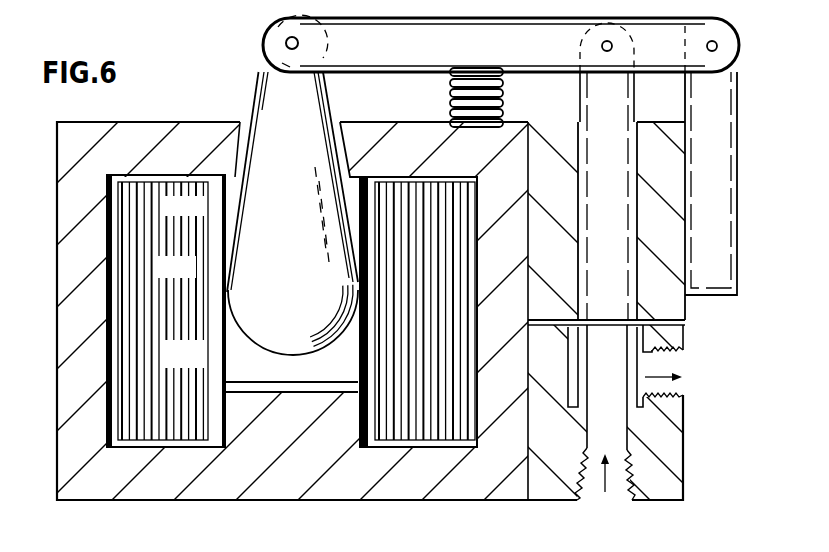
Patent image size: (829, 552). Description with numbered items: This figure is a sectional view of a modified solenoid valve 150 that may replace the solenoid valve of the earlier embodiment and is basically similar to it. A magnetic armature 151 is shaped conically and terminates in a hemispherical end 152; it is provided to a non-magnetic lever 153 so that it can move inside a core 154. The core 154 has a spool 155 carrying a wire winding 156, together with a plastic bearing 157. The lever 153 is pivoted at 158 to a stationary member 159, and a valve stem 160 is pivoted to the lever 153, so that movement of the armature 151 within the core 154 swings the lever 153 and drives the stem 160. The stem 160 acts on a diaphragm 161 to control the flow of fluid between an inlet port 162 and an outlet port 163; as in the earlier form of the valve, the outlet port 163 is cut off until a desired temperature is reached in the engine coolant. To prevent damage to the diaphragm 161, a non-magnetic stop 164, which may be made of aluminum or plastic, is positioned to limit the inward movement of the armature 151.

The valve 150 is at (232, 94).
The magnetic armature 151 is at (311, 290).
The hemispherical end 152 is at (316, 347).
The non-magnetic lever 153 is at (418, 53).
The core 154 is at (333, 462).
The spool 155 is at (203, 361).
The wire winding 156 is at (194, 277).
The plastic bearing 157 is at (217, 204).
The pivot 158 is at (718, 46).
The stationary member 159 is at (729, 135).
The valve stem 160 is at (623, 135).
The diaphragm 161 is at (671, 319).
The inlet port 162 is at (621, 453).
The outlet port 163 is at (668, 391).
The non-magnetic stop 164 is at (291, 393).